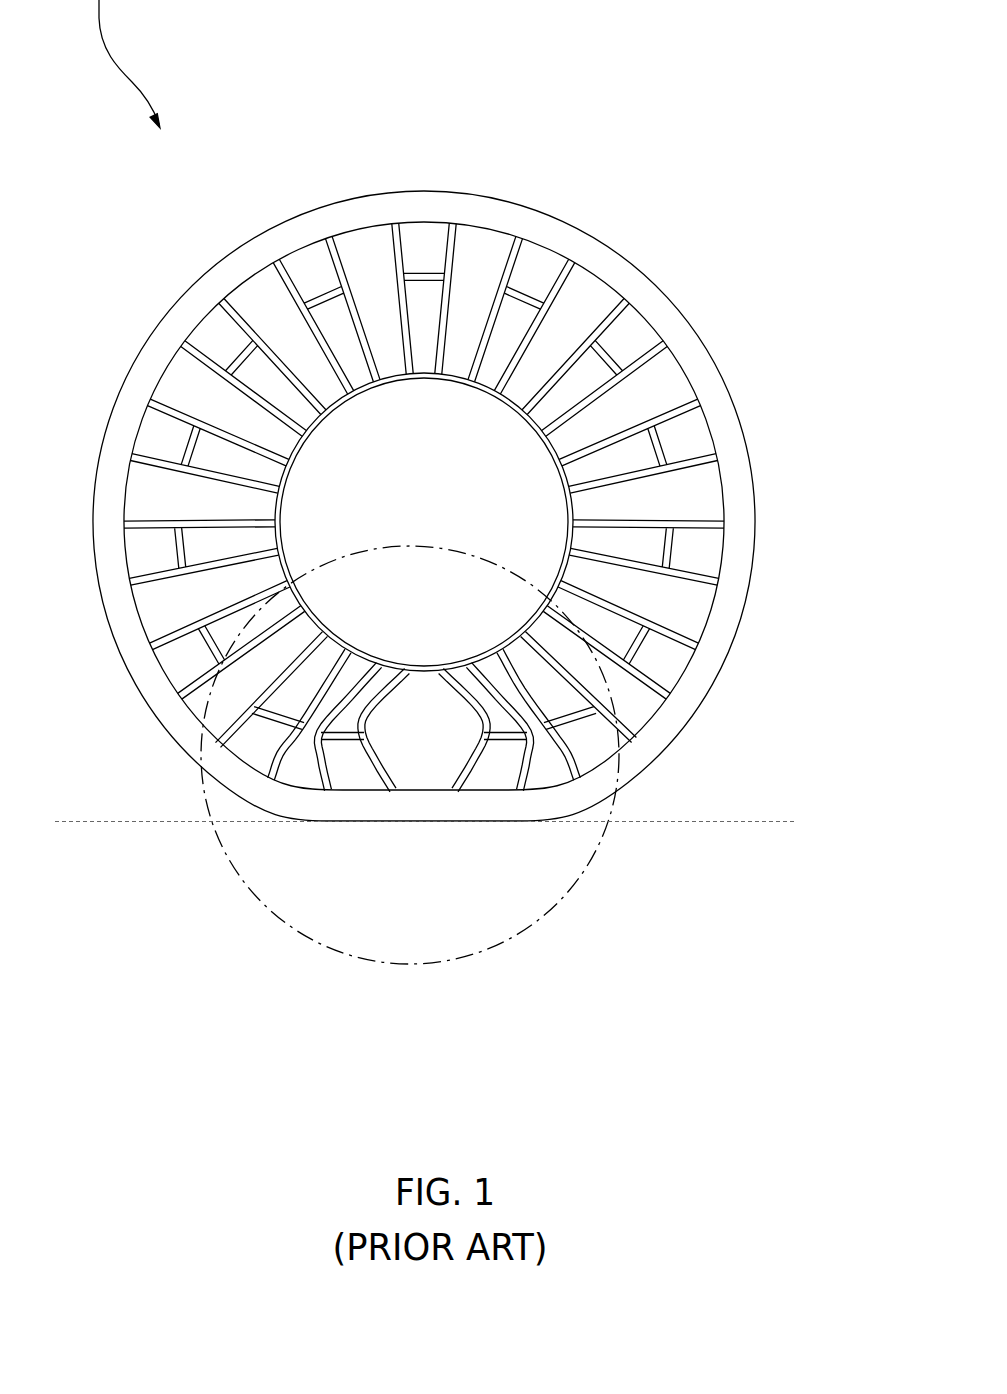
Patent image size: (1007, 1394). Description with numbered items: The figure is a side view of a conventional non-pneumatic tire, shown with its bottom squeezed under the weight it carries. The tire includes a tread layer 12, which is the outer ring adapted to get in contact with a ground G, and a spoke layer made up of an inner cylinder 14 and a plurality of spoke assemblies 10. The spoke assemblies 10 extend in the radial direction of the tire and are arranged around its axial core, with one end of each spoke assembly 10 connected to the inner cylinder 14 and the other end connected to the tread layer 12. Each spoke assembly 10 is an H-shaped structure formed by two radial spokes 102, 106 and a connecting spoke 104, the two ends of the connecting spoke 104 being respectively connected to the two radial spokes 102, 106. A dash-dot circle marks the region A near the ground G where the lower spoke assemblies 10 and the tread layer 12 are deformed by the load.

The spoke assemblies 10 is at (424, 411).
The tread layer 12 is at (360, 210).
The inner cylinder 14 is at (555, 442).
The radial spoke 102 is at (573, 280).
The connecting spoke 104 is at (545, 295).
The radial spoke 106 is at (512, 247).
The contact region A is at (578, 882).
The ground G is at (150, 822).